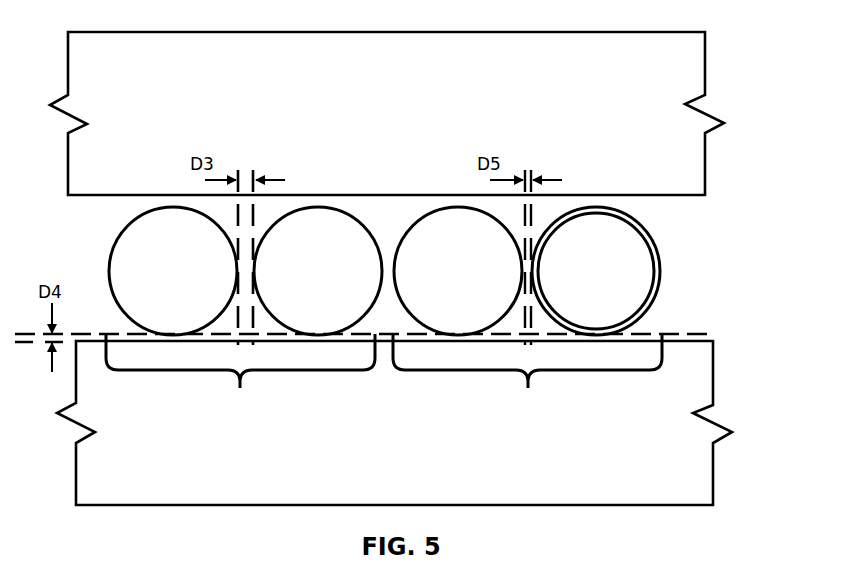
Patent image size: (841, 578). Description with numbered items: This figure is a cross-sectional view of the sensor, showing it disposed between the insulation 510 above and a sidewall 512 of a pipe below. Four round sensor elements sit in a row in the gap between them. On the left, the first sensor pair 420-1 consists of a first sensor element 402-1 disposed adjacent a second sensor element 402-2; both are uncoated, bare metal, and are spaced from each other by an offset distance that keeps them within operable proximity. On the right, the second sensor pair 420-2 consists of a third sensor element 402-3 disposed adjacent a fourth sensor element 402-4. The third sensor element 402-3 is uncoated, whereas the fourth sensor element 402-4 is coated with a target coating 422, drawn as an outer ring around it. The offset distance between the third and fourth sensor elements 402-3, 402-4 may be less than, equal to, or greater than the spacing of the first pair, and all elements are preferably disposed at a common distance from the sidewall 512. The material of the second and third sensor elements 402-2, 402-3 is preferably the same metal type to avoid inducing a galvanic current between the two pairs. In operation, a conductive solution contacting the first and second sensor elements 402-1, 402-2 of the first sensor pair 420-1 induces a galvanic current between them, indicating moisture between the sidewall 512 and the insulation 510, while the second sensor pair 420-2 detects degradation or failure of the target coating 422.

The insulation 510 is at (357, 125).
The sidewall 512 is at (357, 438).
The first sensor element 402-1 is at (149, 282).
The second sensor element 402-2 is at (294, 282).
The third sensor element 402-3 is at (434, 282).
The fourth sensor element 402-4 is at (572, 282).
The target coating 422 is at (657, 240).
The first sensor pair 420-1 is at (240, 373).
The second sensor pair 420-2 is at (527, 375).